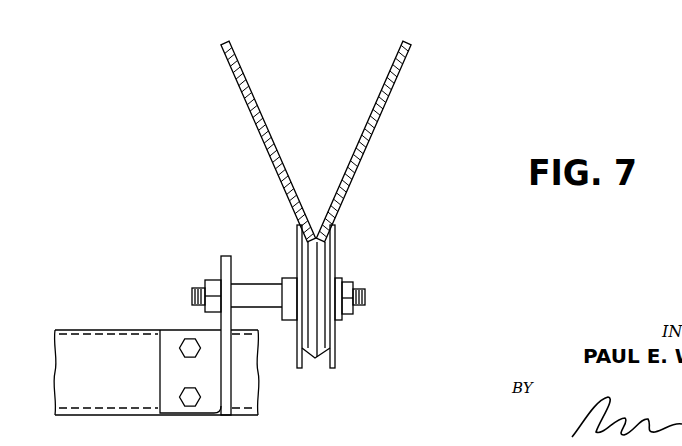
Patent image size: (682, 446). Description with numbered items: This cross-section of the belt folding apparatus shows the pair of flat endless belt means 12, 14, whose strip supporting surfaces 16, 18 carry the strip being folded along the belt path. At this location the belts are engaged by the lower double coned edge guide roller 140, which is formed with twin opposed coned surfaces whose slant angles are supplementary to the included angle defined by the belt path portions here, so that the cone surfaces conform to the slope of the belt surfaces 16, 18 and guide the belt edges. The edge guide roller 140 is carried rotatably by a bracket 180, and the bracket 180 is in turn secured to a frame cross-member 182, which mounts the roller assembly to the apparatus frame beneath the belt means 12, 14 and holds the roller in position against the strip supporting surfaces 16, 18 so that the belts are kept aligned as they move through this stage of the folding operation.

The belt means 12 is at (371, 136).
The belt means 14 is at (262, 134).
The strip supporting surface 16 is at (387, 80).
The strip supporting surface 18 is at (244, 88).
The edge guide roller 140 is at (336, 249).
The bracket 180 is at (180, 330).
The frame cross-member 182 is at (78, 333).